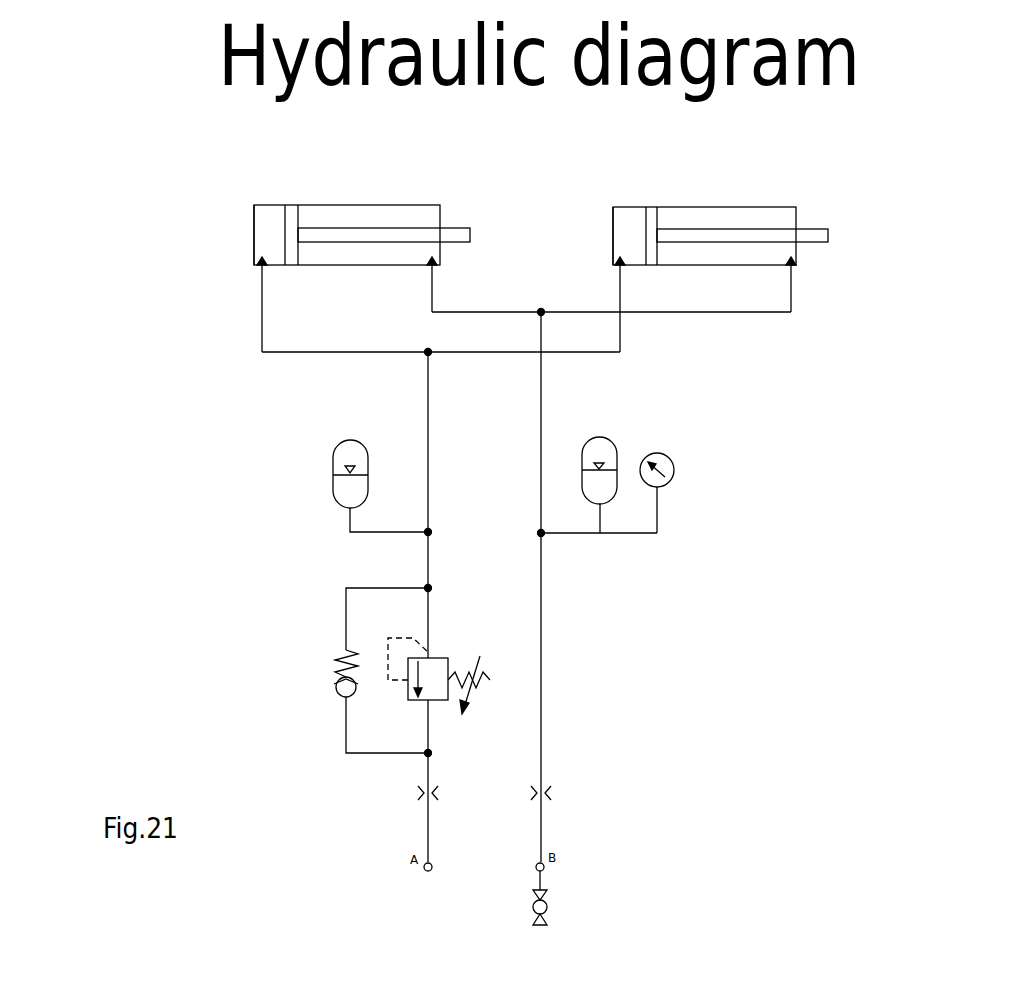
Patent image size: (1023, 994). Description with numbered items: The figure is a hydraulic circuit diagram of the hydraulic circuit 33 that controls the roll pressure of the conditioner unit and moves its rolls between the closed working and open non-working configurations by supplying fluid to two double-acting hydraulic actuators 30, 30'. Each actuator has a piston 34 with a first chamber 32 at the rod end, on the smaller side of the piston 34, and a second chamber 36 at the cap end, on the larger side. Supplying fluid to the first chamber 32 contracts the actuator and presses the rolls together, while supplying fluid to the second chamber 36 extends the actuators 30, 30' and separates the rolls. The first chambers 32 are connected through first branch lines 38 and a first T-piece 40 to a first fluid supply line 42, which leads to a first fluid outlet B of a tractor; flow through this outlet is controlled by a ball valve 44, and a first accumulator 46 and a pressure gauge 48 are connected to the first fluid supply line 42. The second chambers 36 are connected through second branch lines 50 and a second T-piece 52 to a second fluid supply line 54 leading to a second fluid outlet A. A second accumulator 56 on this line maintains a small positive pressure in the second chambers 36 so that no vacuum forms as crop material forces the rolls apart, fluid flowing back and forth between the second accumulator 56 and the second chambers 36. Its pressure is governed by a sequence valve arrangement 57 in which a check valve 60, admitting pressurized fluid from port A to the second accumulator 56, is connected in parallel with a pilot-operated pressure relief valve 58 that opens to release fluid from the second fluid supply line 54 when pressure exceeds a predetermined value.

The hydraulic circuit 33 is at (880, 170).
The hydraulic actuator 30 is at (347, 210).
The hydraulic actuator 30' is at (704, 213).
The first chamber 32 is at (420, 213).
The piston 34 is at (290, 206).
The second chamber 36 is at (262, 208).
The first branch line 38 is at (432, 296).
The first T-piece 40 is at (541, 310).
The first fluid supply line 42 is at (541, 408).
The ball valve 44 is at (547, 915).
The first accumulator 46 is at (612, 448).
The pressure gauge 48 is at (675, 468).
The second branch line 50 is at (262, 318).
The second T-piece 52 is at (428, 350).
The second fluid supply line 54 is at (428, 404).
The second accumulator 56 is at (333, 456).
The sequence valve arrangement 57 is at (320, 605).
The pilot-operated pressure relief valve 58 is at (436, 658).
The check valve 60 is at (336, 692).